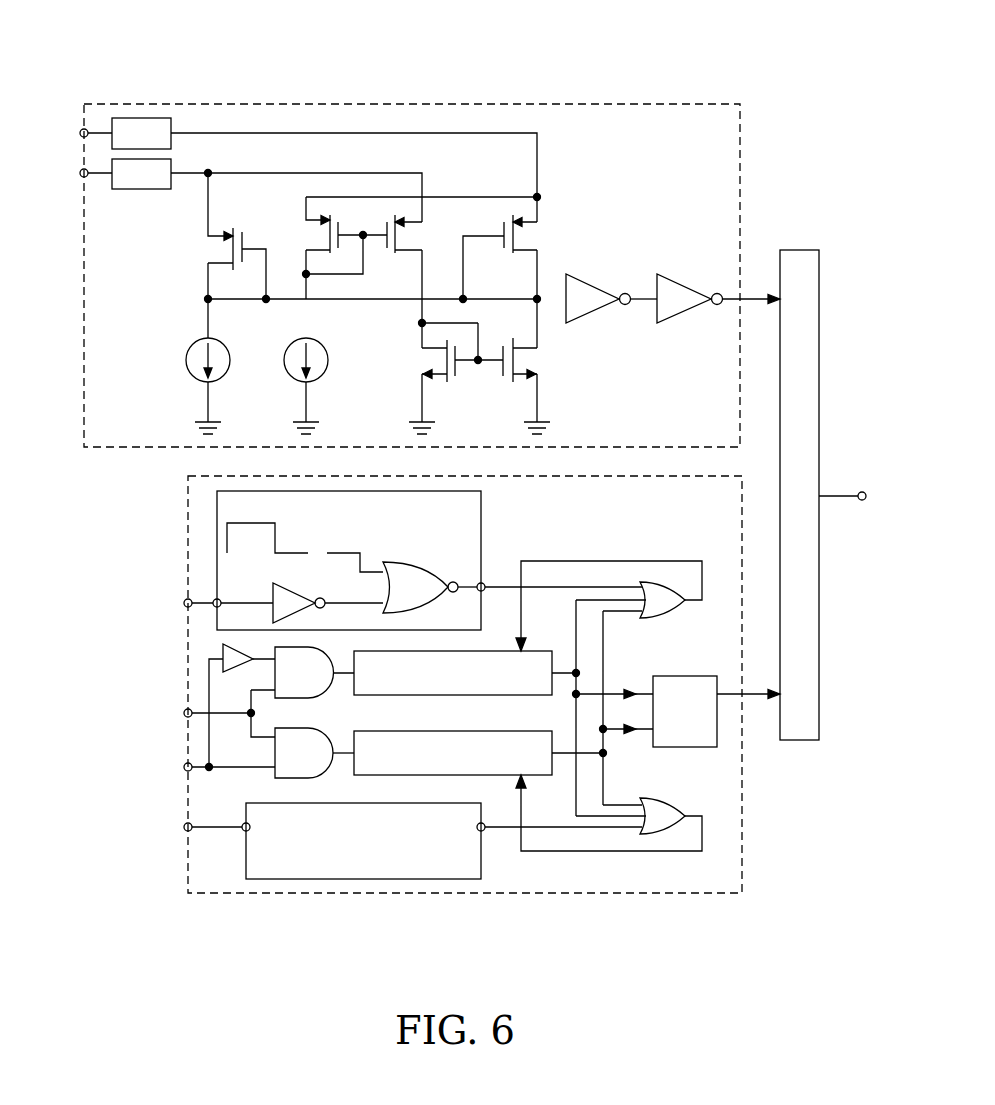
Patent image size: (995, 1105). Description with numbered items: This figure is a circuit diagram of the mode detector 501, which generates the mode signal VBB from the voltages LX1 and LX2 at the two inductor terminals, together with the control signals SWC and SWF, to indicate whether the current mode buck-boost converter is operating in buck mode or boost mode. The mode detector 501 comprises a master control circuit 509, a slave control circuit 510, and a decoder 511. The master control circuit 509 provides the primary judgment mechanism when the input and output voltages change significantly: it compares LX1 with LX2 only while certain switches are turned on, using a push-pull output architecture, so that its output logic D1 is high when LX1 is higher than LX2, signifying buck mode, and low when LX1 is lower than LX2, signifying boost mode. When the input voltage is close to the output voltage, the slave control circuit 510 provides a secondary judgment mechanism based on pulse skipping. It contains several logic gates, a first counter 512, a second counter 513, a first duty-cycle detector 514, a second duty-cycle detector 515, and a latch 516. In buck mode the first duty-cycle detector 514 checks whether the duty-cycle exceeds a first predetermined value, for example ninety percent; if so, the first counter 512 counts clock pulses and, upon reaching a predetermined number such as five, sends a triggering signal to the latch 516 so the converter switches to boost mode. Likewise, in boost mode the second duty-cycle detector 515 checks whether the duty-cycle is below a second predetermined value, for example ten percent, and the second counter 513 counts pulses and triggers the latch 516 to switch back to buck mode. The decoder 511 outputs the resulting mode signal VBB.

The mode detector 501 is at (80, 36).
The master control circuit 509 is at (688, 102).
The slave control circuit 510 is at (188, 512).
The decoder 511 is at (800, 250).
The first counter 512 is at (413, 697).
The second counter 513 is at (466, 731).
The first duty-cycle detector 514 is at (483, 524).
The second duty-cycle detector 515 is at (312, 880).
The latch 516 is at (690, 676).